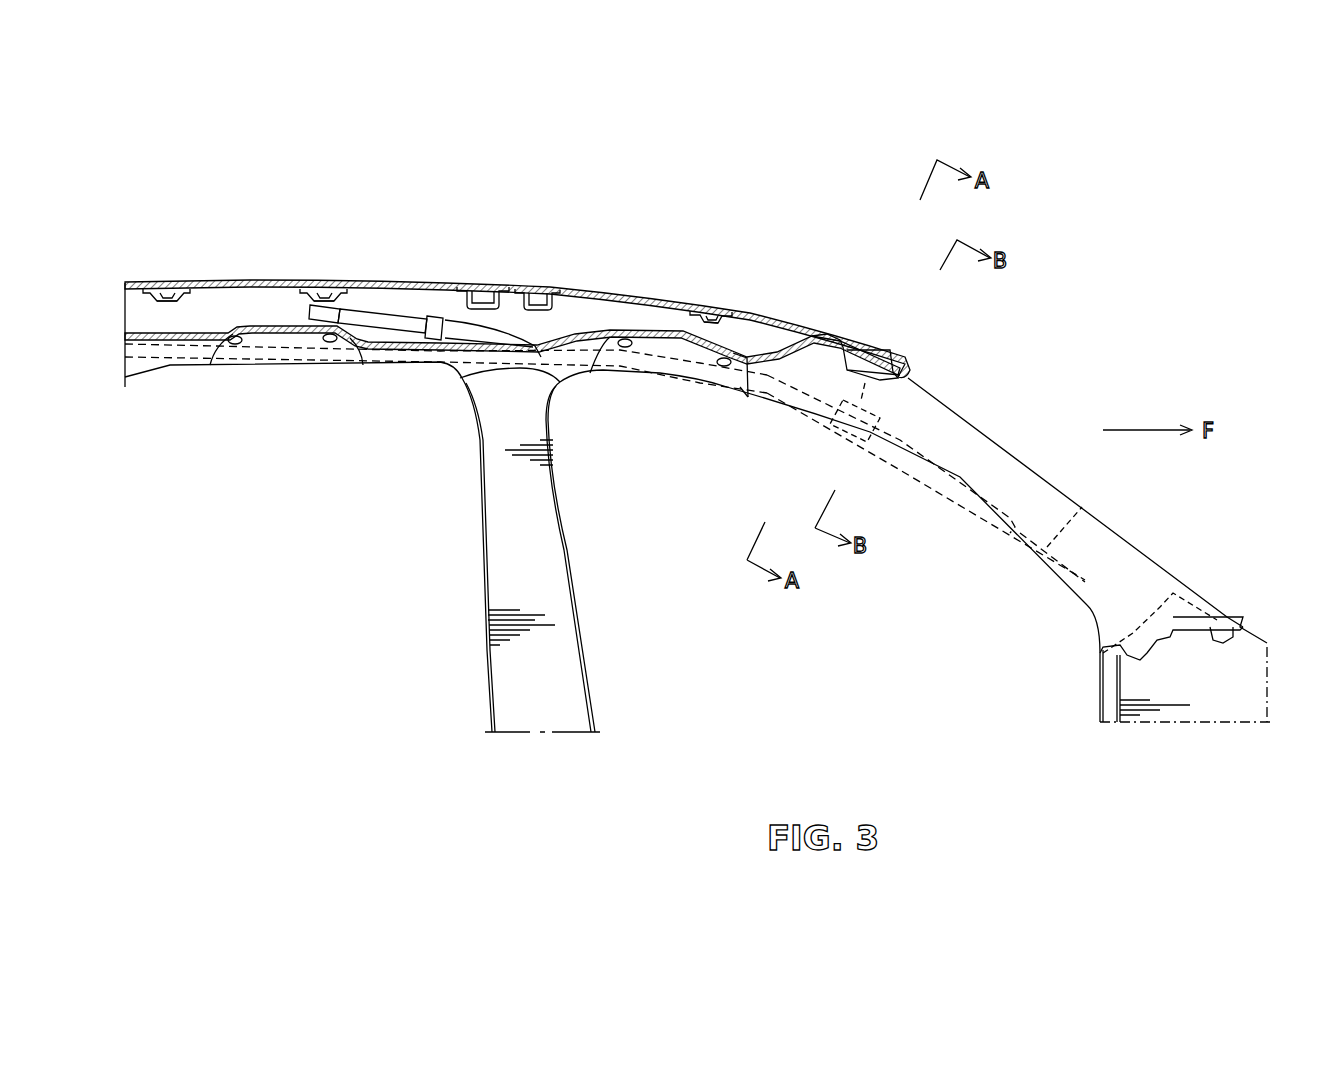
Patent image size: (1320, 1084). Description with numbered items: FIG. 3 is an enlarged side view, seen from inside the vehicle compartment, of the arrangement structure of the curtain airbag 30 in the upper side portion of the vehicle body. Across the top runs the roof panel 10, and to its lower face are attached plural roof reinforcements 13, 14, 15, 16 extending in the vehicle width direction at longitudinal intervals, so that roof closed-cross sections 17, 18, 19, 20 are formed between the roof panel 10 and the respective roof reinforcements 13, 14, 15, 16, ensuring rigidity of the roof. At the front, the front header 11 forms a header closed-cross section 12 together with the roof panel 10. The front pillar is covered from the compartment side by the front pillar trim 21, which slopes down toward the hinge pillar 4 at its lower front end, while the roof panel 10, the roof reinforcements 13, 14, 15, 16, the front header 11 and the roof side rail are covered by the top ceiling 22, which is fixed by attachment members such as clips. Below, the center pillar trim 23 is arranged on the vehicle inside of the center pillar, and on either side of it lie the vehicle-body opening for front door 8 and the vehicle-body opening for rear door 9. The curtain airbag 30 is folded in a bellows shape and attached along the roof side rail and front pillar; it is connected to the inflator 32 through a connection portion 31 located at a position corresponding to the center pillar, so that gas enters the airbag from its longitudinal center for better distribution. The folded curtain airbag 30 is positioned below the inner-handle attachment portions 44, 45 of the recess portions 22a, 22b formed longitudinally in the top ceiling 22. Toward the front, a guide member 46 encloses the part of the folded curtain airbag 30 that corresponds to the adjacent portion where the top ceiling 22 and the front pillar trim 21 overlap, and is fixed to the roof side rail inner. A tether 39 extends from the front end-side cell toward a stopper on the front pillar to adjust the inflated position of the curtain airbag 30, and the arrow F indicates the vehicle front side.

The hinge pillar 4 is at (1103, 690).
The vehicle-body opening for front door 8 is at (675, 619).
The vehicle-body opening for rear door 9 is at (297, 567).
The roof panel 10 is at (645, 290).
The front header 11 is at (847, 353).
The header closed-cross section 12 is at (870, 357).
The roof reinforcement 13 is at (727, 321).
The roof reinforcement 14 is at (552, 309).
The roof reinforcement 15 is at (310, 298).
The roof reinforcement 16 is at (176, 299).
The roof closed-cross section 17 is at (714, 306).
The roof closed-cross section 18 is at (482, 295).
The roof closed-cross section 19 is at (326, 290).
The roof closed-cross section 20 is at (167, 290).
The front pillar trim 21 is at (1027, 483).
The top ceiling 22 is at (604, 328).
The recess portion 22a is at (742, 388).
The recess portion 22b is at (358, 355).
The center pillar trim 23 is at (497, 688).
The curtain airbag 30 is at (641, 382).
The connection portion 31 is at (528, 290).
The inflator 32 is at (380, 305).
The tether 39 is at (1082, 510).
The inner-handle attachment portion 44 is at (622, 352).
The inner-handle attachment portion 45 is at (236, 348).
The guide member 46 is at (838, 438).